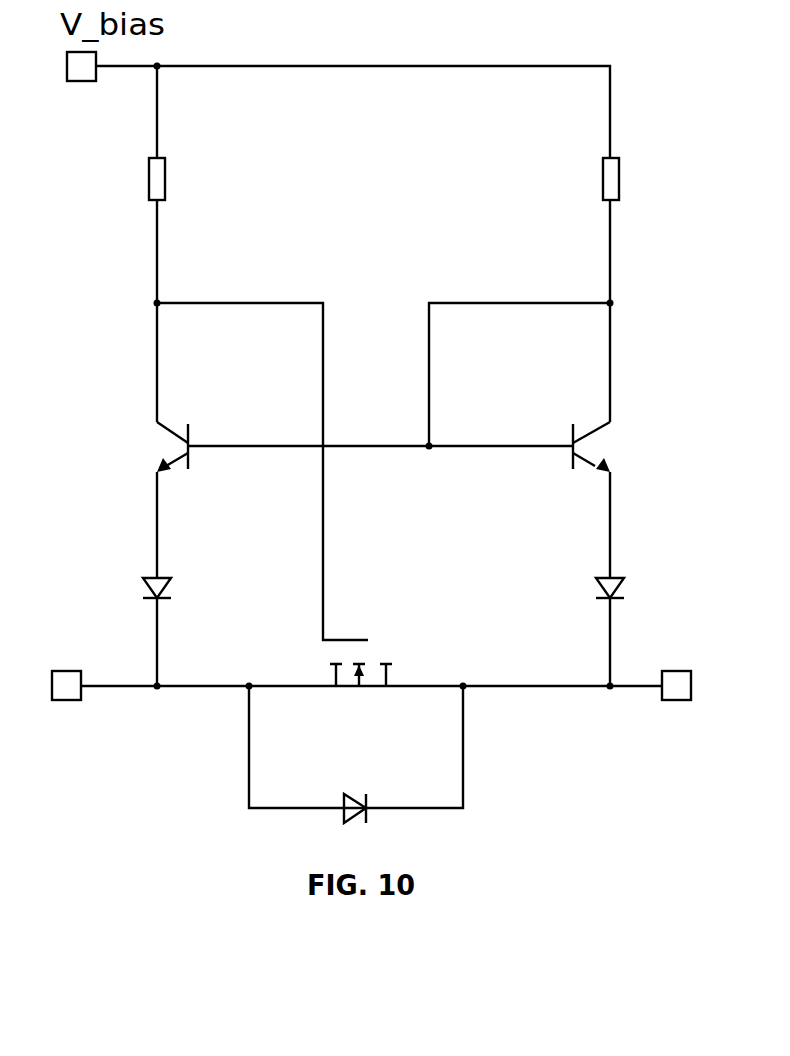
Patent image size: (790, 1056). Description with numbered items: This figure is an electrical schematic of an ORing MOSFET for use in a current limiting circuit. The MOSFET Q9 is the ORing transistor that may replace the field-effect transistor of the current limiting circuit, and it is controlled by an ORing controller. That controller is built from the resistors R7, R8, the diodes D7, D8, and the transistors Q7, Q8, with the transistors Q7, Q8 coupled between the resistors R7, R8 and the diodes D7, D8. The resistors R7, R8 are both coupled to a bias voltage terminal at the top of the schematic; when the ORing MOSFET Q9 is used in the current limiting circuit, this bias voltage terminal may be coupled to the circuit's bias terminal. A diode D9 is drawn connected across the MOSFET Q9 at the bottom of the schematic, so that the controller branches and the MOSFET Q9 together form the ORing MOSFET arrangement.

The resistor R7 is at (177, 163).
The resistor R8 is at (593, 163).
The transistor Q7 is at (148, 500).
The transistor Q8 is at (612, 500).
The diode D7 is at (178, 628).
The diode D8 is at (585, 628).
The MOSFET Q9 is at (363, 692).
The diode D9 is at (356, 754).